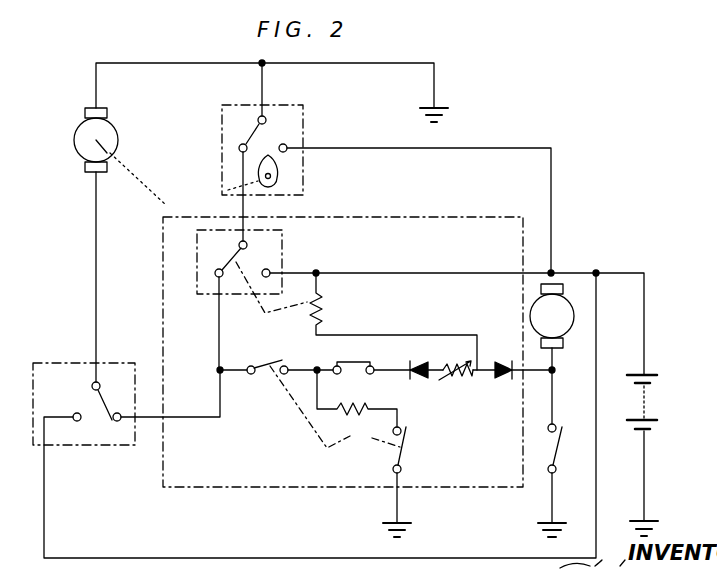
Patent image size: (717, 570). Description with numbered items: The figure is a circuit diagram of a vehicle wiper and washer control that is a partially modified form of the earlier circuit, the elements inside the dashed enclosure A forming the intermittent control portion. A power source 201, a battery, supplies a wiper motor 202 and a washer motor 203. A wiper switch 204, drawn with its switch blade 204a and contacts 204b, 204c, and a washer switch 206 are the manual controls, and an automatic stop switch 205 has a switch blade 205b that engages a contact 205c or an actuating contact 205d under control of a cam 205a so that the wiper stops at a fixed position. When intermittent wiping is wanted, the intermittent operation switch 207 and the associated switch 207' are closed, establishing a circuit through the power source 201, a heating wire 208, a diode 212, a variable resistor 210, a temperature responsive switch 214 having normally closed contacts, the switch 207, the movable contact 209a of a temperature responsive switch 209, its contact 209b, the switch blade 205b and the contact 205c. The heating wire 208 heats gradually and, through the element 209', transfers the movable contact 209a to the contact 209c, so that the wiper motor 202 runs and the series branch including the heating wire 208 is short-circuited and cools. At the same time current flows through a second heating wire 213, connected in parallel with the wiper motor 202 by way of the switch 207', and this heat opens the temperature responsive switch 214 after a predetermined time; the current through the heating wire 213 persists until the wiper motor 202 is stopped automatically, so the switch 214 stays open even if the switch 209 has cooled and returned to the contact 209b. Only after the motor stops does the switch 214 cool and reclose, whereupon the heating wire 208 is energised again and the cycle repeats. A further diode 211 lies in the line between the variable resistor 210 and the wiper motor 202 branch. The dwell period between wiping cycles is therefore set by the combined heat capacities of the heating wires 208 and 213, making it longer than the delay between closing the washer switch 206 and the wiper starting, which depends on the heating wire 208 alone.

The power source 201 is at (648, 396).
The wiper motor 202 is at (74, 141).
The motor 203 is at (572, 298).
The switch 204 is at (58, 363).
The switch contact 204a is at (107, 392).
The switch contact 204b is at (77, 423).
The switch contact 204c is at (120, 423).
The automatic stop switch 205 is at (247, 100).
The relay coil 205a is at (278, 170).
The switch blade 205b is at (239, 148).
The contact 205c is at (258, 120).
The relay contact 205d is at (287, 146).
The washer switch 206 is at (551, 457).
The intermittent operation switch 207 is at (265, 350).
The switch 207' is at (365, 451).
The heating wire 208 is at (393, 321).
The temperature responsive switch 209 is at (221, 277).
The switch linkage 209' is at (189, 314).
The movable contact 209a is at (215, 270).
The contact 209b is at (246, 243).
The contact 209c is at (270, 270).
The variable resistor 210 is at (455, 362).
The diode 211 is at (503, 379).
The diode 212 is at (427, 379).
The heating wire 213 is at (352, 411).
The temperature responsive switch 214 is at (355, 362).
The control unit A is at (455, 212).